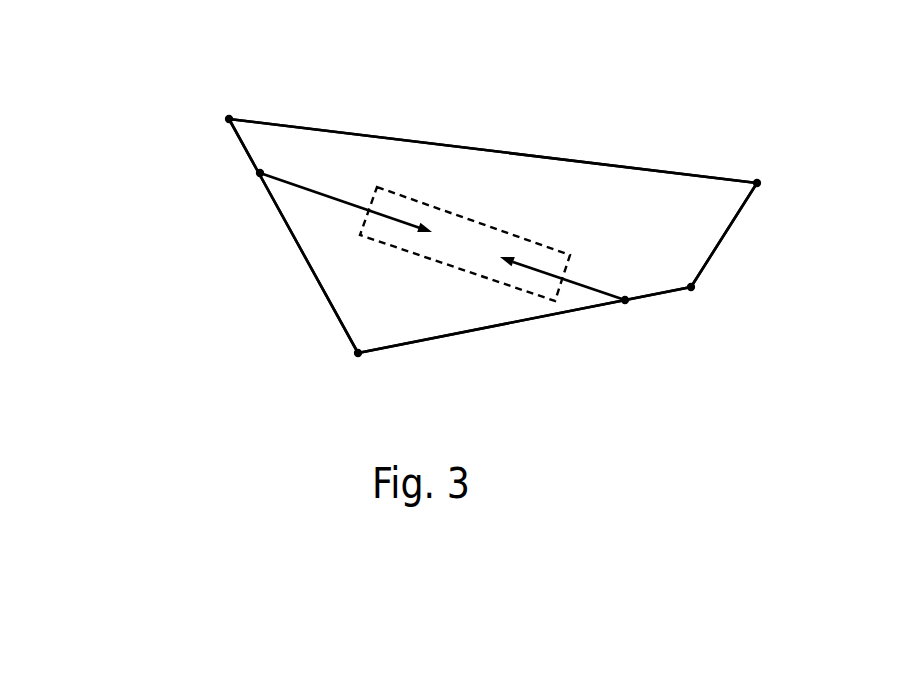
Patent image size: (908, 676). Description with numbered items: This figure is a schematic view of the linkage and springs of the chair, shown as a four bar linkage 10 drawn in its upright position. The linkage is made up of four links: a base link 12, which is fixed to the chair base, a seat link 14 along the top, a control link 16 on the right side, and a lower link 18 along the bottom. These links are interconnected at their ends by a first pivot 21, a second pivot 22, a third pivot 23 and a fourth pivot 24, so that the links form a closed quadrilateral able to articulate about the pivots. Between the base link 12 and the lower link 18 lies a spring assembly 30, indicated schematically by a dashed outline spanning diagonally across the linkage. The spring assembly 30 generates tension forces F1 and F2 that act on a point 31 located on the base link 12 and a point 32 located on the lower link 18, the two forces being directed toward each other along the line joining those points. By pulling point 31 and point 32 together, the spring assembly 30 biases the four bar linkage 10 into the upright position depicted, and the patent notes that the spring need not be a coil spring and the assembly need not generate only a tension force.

The four bar linkage 10 is at (720, 136).
The base link 12 is at (300, 248).
The seat link 14 is at (493, 150).
The control link 16 is at (720, 242).
The lower link 18 is at (512, 324).
The first pivot 21 is at (229, 119).
The second pivot 22 is at (358, 353).
The third pivot 23 is at (757, 183).
The fourth pivot 24 is at (691, 287).
The spring assembly 30 is at (488, 225).
The point 31 is at (260, 173).
The point 32 is at (625, 300).
The tension force F1 is at (340, 200).
The tension force F2 is at (590, 257).